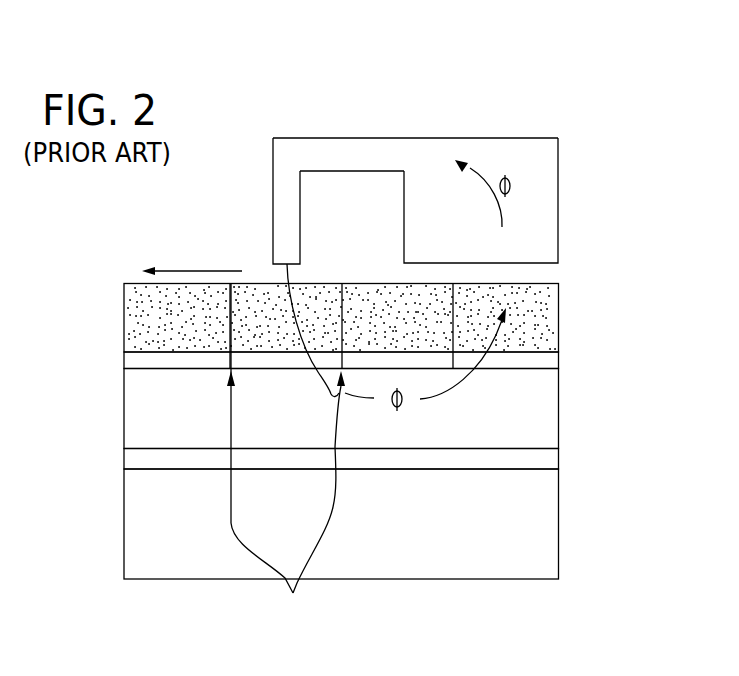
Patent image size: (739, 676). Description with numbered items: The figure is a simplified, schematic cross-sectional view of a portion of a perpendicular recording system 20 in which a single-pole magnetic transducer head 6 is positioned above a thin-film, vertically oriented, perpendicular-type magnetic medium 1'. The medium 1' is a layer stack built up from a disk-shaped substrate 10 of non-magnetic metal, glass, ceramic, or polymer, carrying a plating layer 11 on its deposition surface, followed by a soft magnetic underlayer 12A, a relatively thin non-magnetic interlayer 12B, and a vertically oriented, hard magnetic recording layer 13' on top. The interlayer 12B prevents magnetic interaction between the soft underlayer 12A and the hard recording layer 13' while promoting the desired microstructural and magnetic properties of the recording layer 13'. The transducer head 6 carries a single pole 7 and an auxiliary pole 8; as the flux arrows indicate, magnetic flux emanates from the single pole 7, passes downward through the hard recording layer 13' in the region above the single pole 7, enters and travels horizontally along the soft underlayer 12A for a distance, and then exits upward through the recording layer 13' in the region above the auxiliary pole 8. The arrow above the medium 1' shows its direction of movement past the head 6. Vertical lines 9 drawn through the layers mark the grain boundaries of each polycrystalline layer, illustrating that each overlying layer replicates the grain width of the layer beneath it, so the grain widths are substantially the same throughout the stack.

The recording system 20 is at (565, 105).
The single-pole magnetic transducer head 6 is at (328, 128).
The single pole 7 is at (273, 200).
The auxiliary pole 8 is at (558, 202).
The perpendicular-type magnetic medium 1' is at (348, 424).
The hard magnetic recording layer 13' is at (379, 326).
The non-magnetic interlayer 12B is at (559, 360).
The soft magnetic underlayer 12A is at (559, 412).
The plating layer 11 is at (559, 458).
The substrate 10 is at (559, 529).
The grain boundaries 9 is at (293, 593).